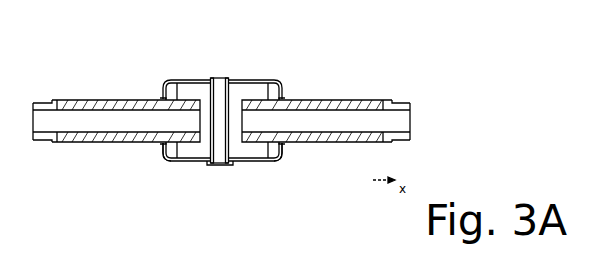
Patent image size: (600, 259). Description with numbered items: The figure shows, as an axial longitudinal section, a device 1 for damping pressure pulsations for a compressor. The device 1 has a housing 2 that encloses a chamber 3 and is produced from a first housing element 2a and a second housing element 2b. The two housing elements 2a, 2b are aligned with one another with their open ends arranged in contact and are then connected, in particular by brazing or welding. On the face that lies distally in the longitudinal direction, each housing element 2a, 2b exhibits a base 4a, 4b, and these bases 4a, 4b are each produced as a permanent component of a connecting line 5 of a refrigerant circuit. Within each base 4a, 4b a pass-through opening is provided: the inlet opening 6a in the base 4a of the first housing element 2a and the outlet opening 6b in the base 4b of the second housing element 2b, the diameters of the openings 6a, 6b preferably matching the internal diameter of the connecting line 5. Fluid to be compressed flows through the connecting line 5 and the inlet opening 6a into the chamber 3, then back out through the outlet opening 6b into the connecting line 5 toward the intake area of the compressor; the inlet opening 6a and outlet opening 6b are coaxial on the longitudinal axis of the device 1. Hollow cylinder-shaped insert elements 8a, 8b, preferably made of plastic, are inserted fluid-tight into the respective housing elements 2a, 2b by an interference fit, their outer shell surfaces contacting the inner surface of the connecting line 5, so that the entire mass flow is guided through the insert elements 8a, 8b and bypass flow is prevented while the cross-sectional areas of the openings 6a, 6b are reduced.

The device for damping pressure pulsations 1 is at (339, 63).
The housing 2 is at (192, 161).
The first housing element 2a is at (184, 80).
The second housing element 2b is at (250, 80).
The chamber 3 is at (223, 96).
The base 4a is at (160, 99).
The base 4b is at (285, 99).
The connecting line 5 is at (88, 100).
The inlet opening 6a is at (162, 150).
The outlet opening 6b is at (281, 150).
The insert element 8a is at (100, 124).
The insert element 8b is at (337, 124).